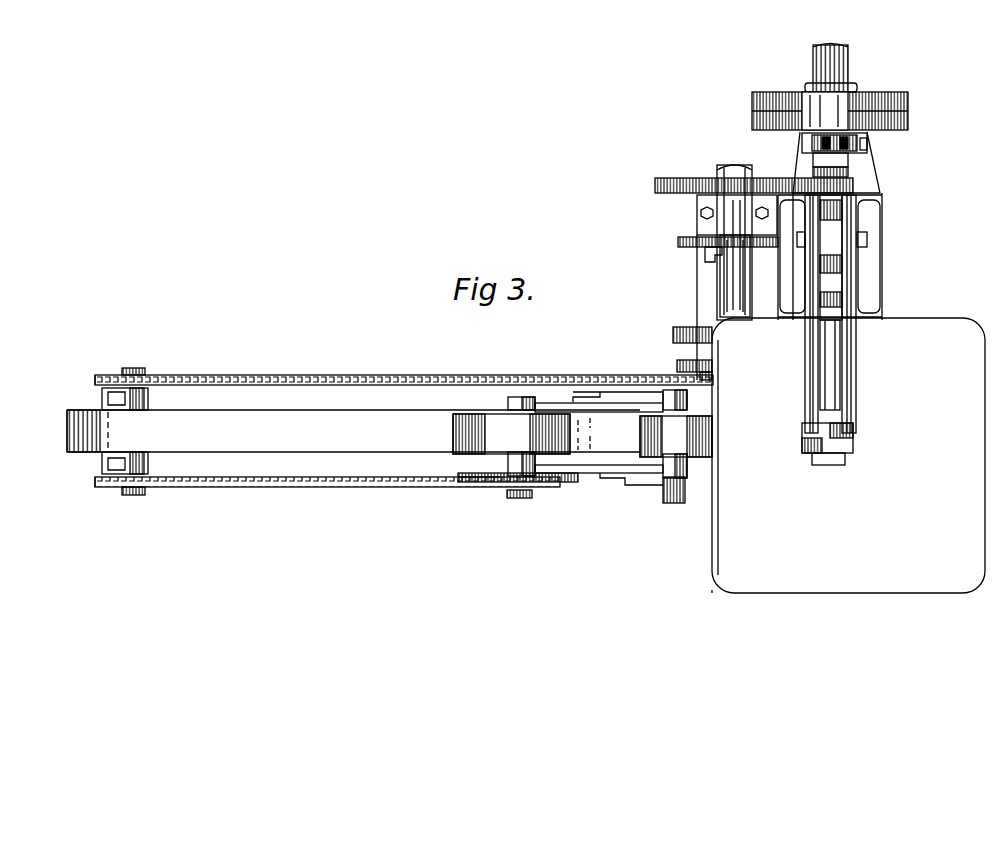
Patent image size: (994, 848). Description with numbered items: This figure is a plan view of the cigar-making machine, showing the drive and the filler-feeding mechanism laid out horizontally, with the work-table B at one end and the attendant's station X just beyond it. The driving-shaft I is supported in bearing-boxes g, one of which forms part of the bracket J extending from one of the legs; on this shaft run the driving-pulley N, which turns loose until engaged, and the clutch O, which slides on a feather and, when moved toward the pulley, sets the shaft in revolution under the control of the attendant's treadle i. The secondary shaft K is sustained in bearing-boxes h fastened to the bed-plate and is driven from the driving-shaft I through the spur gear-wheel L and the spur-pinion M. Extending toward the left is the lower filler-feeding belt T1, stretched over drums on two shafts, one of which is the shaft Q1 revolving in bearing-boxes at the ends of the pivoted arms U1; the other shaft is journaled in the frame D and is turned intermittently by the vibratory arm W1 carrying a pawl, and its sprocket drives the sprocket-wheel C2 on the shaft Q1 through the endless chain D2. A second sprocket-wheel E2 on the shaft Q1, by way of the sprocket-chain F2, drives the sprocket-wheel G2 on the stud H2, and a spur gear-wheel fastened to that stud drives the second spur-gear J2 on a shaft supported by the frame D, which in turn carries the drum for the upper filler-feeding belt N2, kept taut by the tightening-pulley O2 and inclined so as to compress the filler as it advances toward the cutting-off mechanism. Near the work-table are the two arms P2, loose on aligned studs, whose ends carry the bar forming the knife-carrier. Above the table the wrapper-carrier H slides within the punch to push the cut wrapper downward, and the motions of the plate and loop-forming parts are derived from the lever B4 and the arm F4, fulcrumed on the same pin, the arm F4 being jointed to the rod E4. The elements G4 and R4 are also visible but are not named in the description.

The driving-shaft I is at (834, 46).
The bearing-box g is at (848, 68).
The driving-pulley N is at (839, 111).
The clutch O is at (873, 148).
The bracket J is at (867, 177).
The spur gear-wheel L is at (679, 179).
The spur-pinion M is at (803, 178).
The plate R is at (693, 271).
The secondary shaft K is at (726, 276).
The bearing-box h is at (703, 227).
The treadle i is at (713, 258).
The work-table B is at (848, 455).
The attendant's station X is at (770, 608).
The lever B4 is at (857, 353).
The arm F4 is at (805, 373).
The spindle G4 is at (850, 386).
The slide rod R4 is at (848, 416).
The rod E4 is at (808, 460).
The wrapper-carrier H is at (834, 455).
The arm P2 is at (671, 372).
The lower filler-feeding belt T1 is at (353, 431).
The vibratory arm W1 is at (78, 410).
The endless chain D2 is at (313, 381).
The sprocket-chain F2 is at (330, 492).
The sprocket-wheel C2 is at (150, 377).
The shaft Q1 is at (132, 497).
The arm U1 is at (150, 401).
The sprocket-wheel E2 is at (97, 492).
The upper filler-feeding belt N2 is at (521, 434).
The tightening-pulley O2 is at (676, 436).
The stud H2 is at (520, 497).
The sprocket-wheel G2 is at (558, 490).
The spur-gear J2 is at (452, 495).
The frame D is at (600, 473).